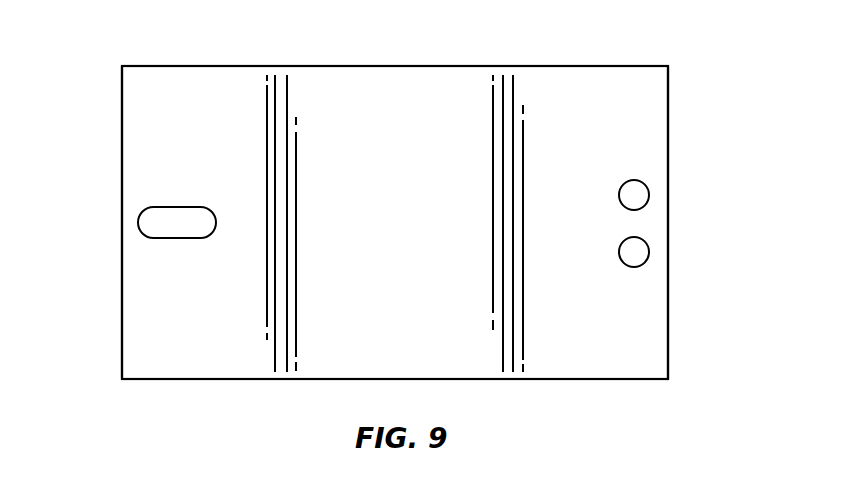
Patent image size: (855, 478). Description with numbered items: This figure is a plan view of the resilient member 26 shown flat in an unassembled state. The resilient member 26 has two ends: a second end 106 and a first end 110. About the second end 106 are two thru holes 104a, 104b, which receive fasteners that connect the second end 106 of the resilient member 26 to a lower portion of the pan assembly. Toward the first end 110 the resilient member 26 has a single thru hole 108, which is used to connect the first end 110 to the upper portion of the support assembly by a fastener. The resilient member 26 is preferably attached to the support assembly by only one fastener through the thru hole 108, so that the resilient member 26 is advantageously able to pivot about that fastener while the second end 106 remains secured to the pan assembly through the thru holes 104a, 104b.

The resilient member 26 is at (584, 46).
The thru hole 104a is at (638, 196).
The thru hole 104b is at (638, 253).
The second end 106 is at (684, 322).
The thru hole 108 is at (177, 220).
The first end 110 is at (105, 323).